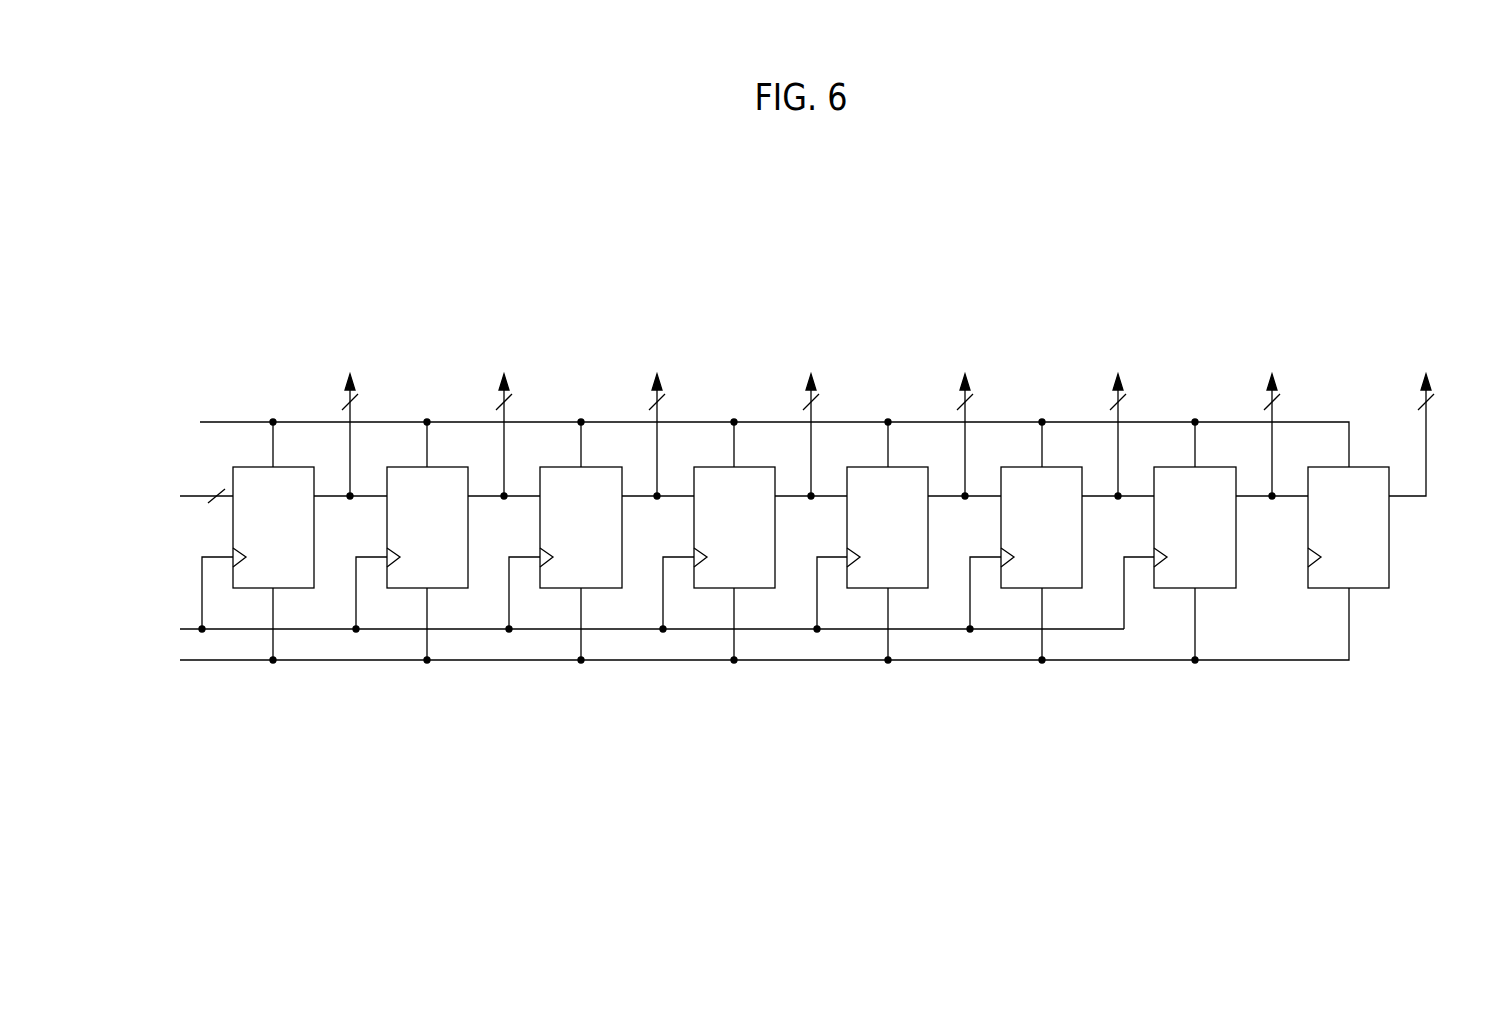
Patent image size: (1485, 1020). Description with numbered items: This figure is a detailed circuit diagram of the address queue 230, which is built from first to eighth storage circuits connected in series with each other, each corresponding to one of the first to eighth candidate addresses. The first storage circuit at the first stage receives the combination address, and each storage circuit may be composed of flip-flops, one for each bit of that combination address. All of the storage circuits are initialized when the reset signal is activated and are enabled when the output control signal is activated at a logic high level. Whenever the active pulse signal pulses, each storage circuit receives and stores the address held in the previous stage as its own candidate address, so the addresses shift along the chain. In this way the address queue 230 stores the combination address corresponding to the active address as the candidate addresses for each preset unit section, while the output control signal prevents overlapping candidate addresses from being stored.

The address queue 230 is at (185, 337).